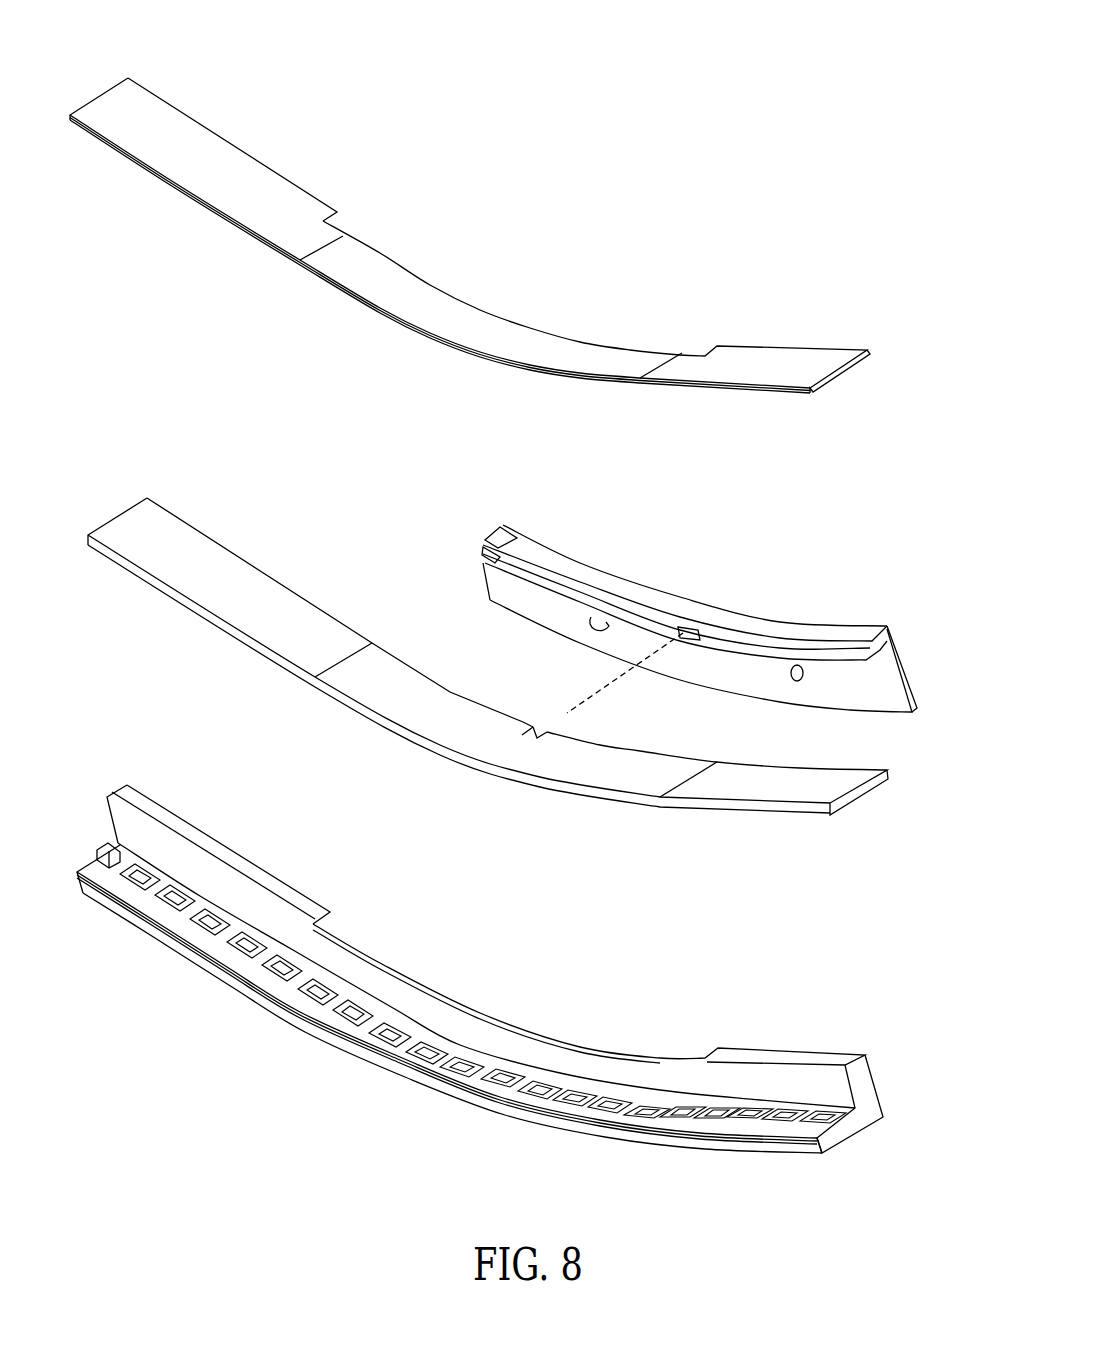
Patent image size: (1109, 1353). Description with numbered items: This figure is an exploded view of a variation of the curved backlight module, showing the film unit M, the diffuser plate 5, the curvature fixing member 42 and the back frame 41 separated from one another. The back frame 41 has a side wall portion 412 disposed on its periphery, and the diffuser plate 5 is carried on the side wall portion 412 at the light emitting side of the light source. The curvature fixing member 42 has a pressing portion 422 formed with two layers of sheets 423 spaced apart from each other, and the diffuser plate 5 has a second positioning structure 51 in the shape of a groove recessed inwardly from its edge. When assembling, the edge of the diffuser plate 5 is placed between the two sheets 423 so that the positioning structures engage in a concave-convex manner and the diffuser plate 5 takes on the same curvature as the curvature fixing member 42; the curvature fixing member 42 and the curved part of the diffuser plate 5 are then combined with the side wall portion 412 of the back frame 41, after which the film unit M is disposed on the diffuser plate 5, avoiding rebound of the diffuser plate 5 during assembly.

The film unit M is at (178, 108).
The diffuser plate 5 is at (147, 498).
The second positioning structure 51 is at (540, 737).
The curvature fixing member 42 is at (720, 607).
The pressing portion 422 is at (893, 646).
The sheets 423 is at (492, 531).
The back frame 41 is at (800, 1033).
The side wall portion 412 is at (868, 1093).